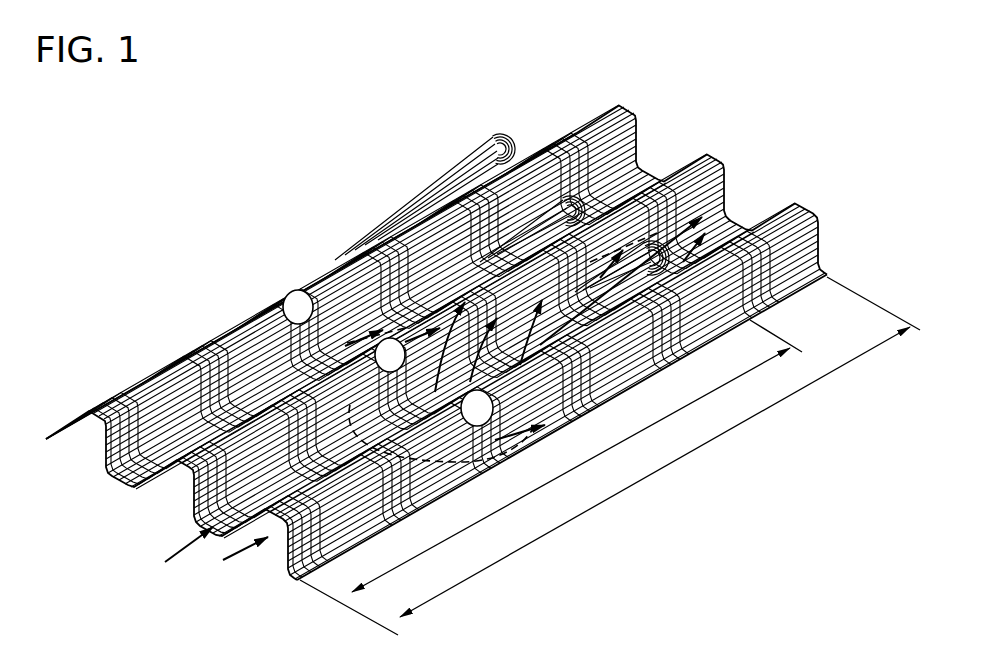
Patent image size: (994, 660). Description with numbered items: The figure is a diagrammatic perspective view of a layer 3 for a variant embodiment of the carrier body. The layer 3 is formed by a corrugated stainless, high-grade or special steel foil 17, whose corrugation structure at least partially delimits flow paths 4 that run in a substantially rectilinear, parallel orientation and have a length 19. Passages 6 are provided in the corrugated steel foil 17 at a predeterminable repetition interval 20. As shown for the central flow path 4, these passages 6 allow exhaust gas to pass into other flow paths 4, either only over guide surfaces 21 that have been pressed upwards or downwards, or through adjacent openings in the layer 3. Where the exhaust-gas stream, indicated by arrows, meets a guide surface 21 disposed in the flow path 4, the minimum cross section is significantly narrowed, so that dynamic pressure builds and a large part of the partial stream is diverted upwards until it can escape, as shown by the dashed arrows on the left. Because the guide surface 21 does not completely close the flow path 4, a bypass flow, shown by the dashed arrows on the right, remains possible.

The layer 3 is at (792, 146).
The flow paths 4 is at (228, 562).
The passages 6 is at (300, 296).
The corrugated stainless, high-grade or special steel foil 17 is at (157, 365).
The length 19 is at (660, 447).
The repetition interval 20 is at (551, 477).
The guide surfaces 21 is at (477, 150).